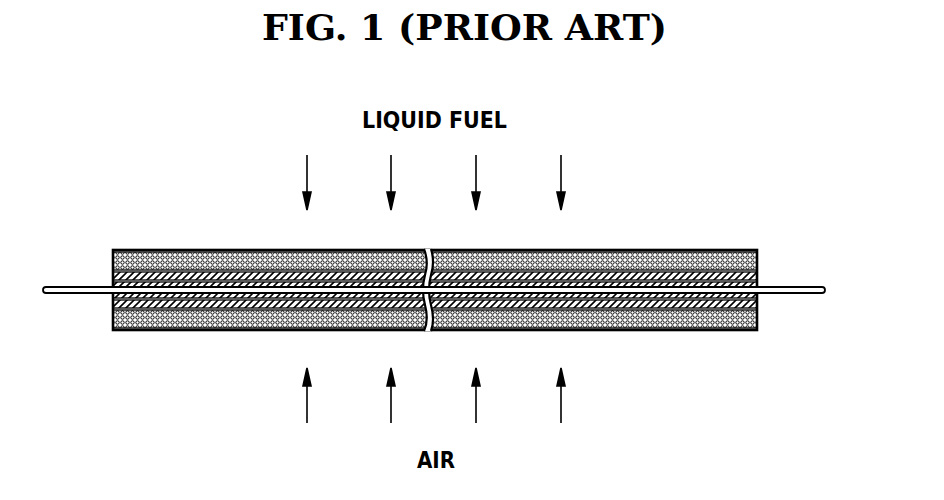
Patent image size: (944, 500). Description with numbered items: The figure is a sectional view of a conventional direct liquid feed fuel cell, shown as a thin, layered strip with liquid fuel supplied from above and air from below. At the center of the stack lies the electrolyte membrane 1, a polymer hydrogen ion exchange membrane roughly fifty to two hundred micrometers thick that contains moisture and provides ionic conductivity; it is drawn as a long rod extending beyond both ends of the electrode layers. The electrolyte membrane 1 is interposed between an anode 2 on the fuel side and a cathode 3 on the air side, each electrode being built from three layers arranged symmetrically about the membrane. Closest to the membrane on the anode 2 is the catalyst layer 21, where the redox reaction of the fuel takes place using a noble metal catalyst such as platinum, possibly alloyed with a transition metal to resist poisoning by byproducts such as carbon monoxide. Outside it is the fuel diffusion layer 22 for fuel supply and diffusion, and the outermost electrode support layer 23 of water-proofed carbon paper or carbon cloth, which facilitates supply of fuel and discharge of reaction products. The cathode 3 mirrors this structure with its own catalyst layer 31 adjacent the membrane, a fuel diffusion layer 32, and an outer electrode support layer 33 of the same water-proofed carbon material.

The electrolyte membrane 1 is at (830, 289).
The anode 2 is at (488, 248).
The catalyst layer 21 is at (758, 283).
The fuel diffusion layer 22 is at (758, 268).
The electrode support layer 23 is at (758, 254).
The cathode 3 is at (488, 329).
The catalyst layer 31 is at (758, 296).
The fuel diffusion layer 32 is at (758, 305).
The electrode support layer 33 is at (758, 320).